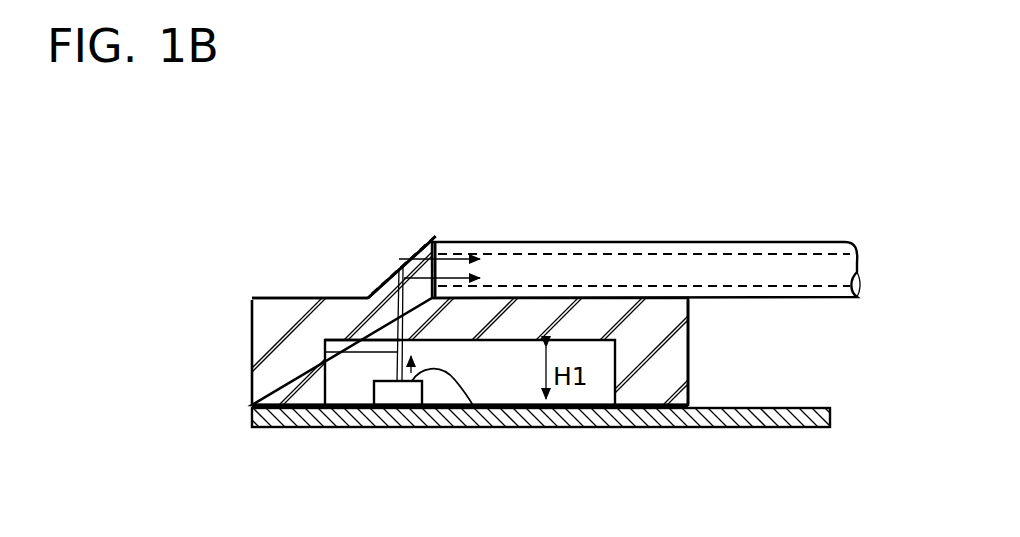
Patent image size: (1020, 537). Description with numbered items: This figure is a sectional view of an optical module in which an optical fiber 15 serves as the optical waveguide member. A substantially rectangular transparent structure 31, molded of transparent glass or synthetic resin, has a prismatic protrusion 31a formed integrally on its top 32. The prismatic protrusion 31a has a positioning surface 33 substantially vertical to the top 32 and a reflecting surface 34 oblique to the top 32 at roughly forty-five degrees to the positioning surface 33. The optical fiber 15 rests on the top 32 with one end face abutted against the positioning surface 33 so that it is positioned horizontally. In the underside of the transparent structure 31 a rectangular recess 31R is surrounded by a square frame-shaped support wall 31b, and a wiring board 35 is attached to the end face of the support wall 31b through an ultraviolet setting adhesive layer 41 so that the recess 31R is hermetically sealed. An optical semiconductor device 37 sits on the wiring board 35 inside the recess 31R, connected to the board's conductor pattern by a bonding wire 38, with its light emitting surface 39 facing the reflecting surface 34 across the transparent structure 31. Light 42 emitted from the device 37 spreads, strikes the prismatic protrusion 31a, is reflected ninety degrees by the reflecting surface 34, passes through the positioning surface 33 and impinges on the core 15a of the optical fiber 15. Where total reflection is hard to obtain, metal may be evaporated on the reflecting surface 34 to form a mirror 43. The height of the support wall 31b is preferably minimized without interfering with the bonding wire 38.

The optical fiber 15 is at (795, 242).
The core 15a is at (674, 258).
The transparent structure 31 is at (268, 308).
The prismatic protrusion 31a is at (393, 264).
The support wall 31b is at (262, 378).
The recess 31R is at (512, 385).
The top 32 is at (319, 294).
The positioning surface 33 is at (448, 250).
The reflecting surface 34 is at (396, 262).
The wiring board 35 is at (747, 423).
The optical semiconductor device 37 is at (389, 400).
The bonding wire 38 is at (460, 397).
The light emitting surface 39 is at (386, 378).
The adhesive layer 41 is at (252, 407).
The light 42 is at (323, 349).
The mirror 43 is at (368, 294).